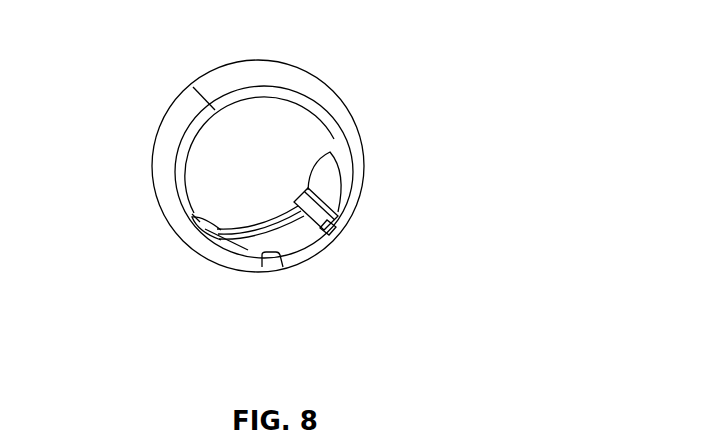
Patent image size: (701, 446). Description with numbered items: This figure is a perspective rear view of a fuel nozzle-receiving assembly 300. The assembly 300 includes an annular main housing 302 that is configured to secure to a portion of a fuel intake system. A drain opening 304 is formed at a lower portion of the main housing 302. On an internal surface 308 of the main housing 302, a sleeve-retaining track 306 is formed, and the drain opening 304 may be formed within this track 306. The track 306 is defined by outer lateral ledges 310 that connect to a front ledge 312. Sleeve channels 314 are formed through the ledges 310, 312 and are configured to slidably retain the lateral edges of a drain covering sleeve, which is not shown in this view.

The fuel nozzle-receiving assembly 300 is at (428, 114).
The annular main housing 302 is at (307, 73).
The drain opening 304 is at (272, 267).
The sleeve-retaining track 306 is at (333, 230).
The internal surface 308 is at (340, 190).
The outer lateral ledges 310 is at (312, 190).
The front ledge 312 is at (306, 226).
The sleeve channels 314 is at (223, 240).